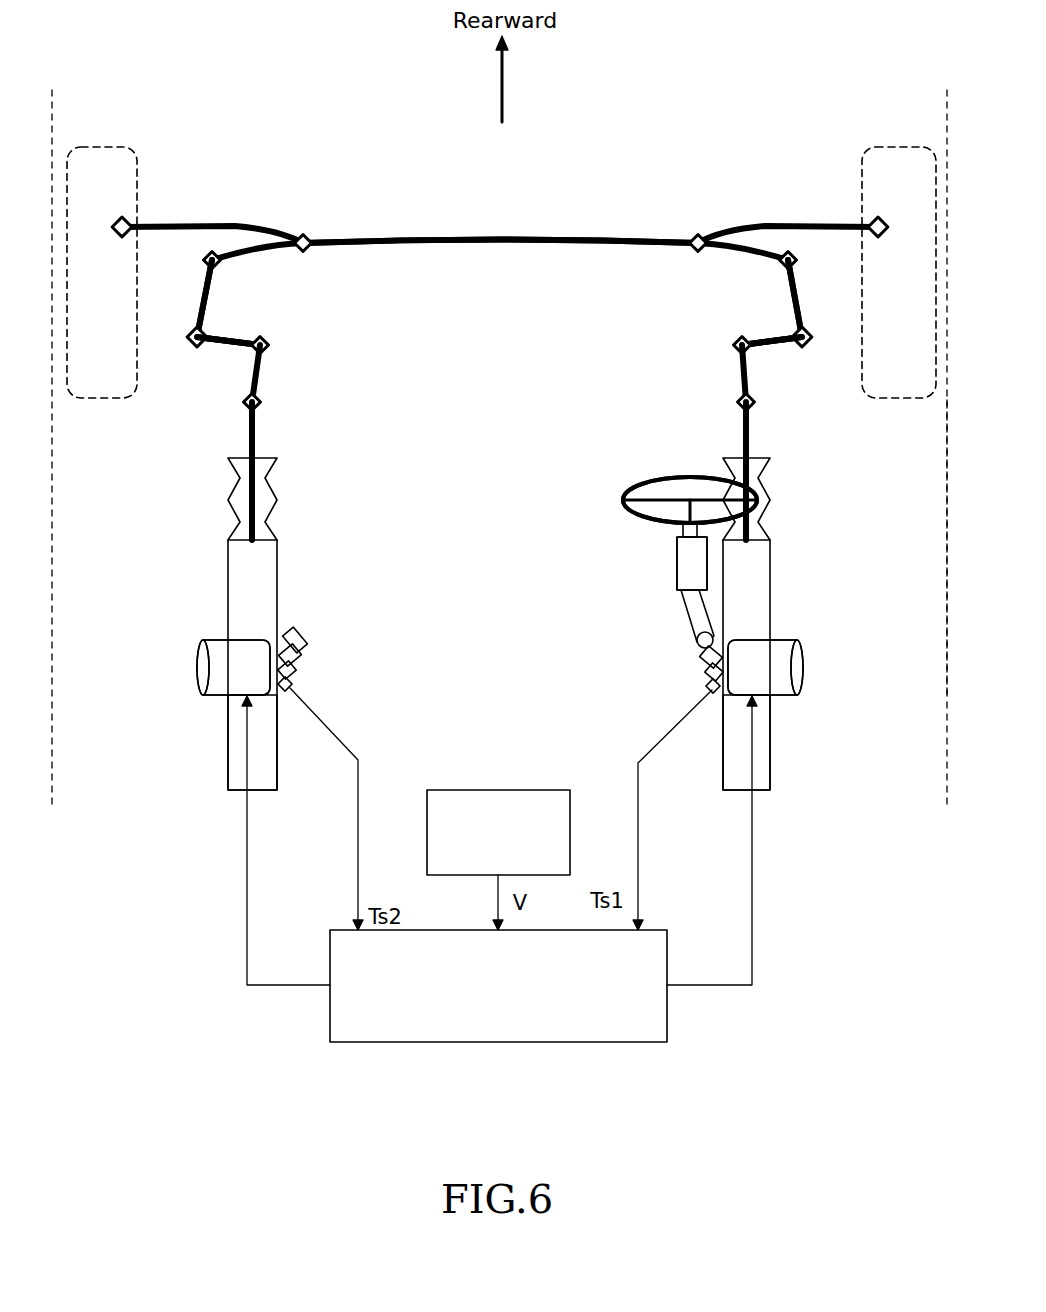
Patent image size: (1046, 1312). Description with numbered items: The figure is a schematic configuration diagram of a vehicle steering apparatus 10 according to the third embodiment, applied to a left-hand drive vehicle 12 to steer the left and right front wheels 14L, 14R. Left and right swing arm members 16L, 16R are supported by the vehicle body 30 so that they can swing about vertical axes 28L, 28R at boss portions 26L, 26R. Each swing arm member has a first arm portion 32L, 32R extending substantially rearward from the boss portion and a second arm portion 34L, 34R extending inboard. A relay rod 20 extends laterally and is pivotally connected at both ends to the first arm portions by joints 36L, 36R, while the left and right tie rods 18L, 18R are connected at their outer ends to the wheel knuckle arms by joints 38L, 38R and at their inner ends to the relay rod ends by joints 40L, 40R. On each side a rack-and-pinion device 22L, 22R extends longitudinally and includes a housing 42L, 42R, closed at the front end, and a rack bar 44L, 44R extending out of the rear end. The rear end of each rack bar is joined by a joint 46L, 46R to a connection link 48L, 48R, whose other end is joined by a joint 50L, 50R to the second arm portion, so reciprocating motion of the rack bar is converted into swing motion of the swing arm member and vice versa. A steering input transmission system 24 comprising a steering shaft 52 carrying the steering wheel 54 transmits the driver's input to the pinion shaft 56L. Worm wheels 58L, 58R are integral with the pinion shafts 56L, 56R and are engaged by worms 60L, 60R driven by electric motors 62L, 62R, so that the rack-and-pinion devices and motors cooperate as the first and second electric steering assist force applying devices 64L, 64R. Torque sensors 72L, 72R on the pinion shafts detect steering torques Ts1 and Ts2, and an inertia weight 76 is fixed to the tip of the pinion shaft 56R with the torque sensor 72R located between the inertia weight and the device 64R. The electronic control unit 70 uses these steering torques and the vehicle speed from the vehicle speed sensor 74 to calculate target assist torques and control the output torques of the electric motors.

The steering apparatus 10 is at (392, 178).
The vehicle 12 is at (712, 103).
The right front wheel 14R is at (101, 400).
The left front wheel 14L is at (888, 400).
The right swing arm member 16R is at (216, 314).
The left swing arm member 16L is at (742, 330).
The right tie rod 18R is at (172, 224).
The left tie rod 18L is at (838, 224).
The relay rod 20 is at (490, 242).
The rack-and-pinion device 22R is at (222, 562).
The rack-and-pinion device 22L is at (778, 564).
The steering input transmission system 24 is at (662, 599).
The boss portion 26R is at (196, 347).
The boss portion 26L is at (806, 347).
The vertical axis 28R is at (200, 332).
The vertical axis 28L is at (805, 332).
The vehicle body 30 is at (947, 556).
The first arm portion 32R is at (203, 292).
The first arm portion 32L is at (798, 292).
The second arm portion 34R is at (255, 340).
The second arm portion 34L is at (770, 352).
The joint 36R is at (216, 254).
The joint 36L is at (785, 254).
The joint 38R is at (120, 220).
The joint 38L is at (880, 220).
The joint 40R is at (303, 237).
The joint 40L is at (699, 237).
The housing 42R is at (237, 771).
The housing 42L is at (765, 771).
The rack bar 44R is at (236, 466).
The rack bar 44L is at (775, 467).
The joint 46R is at (259, 407).
The joint 46L is at (740, 406).
The connection link 48R is at (262, 380).
The connection link 48L is at (740, 378).
The joint 50R is at (270, 348).
The joint 50L is at (733, 347).
The steering shaft 52 is at (677, 572).
The steering wheel 54 is at (622, 500).
The pinion shaft 56R is at (303, 652).
The pinion shaft 56L is at (700, 658).
The worm wheel 58R is at (300, 670).
The worm wheel 58L is at (704, 672).
The worm 60R is at (292, 690).
The worm 60L is at (708, 690).
The electric motor 62R is at (200, 678).
The electric motor 62L is at (801, 678).
The second electric steering assist force applying device 64R is at (177, 648).
The first electric steering assist force applying device 64L is at (824, 650).
The electronic control unit 70 is at (498, 1044).
The torque sensor 72R is at (292, 697).
The torque sensor 72L is at (710, 700).
The vehicle speed sensor 74 is at (498, 790).
The inertia weight 76 is at (300, 630).